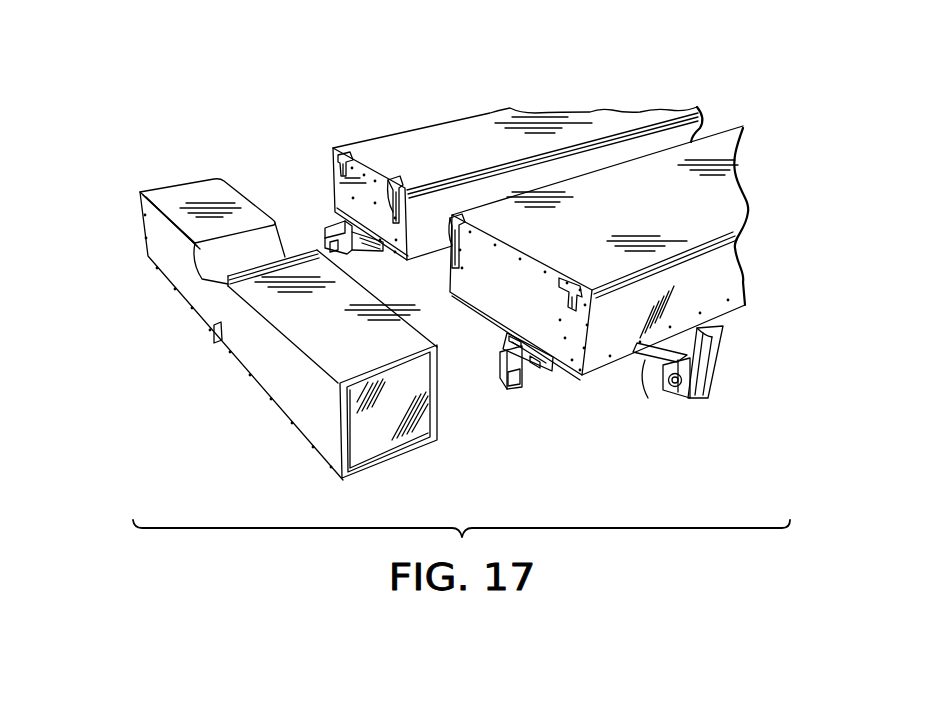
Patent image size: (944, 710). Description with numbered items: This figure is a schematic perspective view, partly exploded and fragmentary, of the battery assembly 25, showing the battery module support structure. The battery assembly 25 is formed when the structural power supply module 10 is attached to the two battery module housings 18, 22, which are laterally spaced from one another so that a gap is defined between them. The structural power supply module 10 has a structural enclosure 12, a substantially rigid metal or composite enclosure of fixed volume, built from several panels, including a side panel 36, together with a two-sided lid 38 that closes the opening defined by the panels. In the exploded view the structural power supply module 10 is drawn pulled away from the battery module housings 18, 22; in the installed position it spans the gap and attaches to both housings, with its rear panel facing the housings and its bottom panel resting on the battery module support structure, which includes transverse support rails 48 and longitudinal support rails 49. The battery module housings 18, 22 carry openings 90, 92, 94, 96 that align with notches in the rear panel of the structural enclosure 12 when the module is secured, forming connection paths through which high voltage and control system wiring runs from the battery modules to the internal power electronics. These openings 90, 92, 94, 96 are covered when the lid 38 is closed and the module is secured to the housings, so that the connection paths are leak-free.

The structural power supply module 10 is at (145, 140).
The structural enclosure 12 is at (293, 382).
The battery module housing 18 is at (698, 222).
The battery module housing 22 is at (592, 113).
The battery assembly 25 is at (295, 72).
The side panel 36 is at (388, 412).
The lid 38 is at (210, 190).
The transverse support rail 48 is at (647, 367).
The longitudinal support rail 49 is at (360, 250).
The opening 90 is at (571, 282).
The opening 92 is at (340, 152).
The opening 94 is at (451, 216).
The opening 96 is at (392, 183).